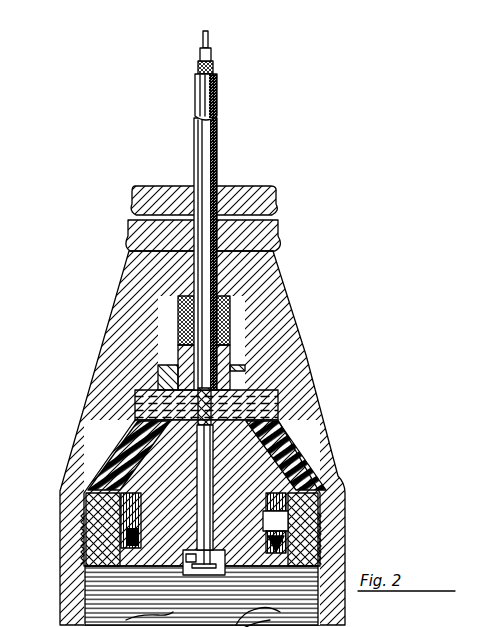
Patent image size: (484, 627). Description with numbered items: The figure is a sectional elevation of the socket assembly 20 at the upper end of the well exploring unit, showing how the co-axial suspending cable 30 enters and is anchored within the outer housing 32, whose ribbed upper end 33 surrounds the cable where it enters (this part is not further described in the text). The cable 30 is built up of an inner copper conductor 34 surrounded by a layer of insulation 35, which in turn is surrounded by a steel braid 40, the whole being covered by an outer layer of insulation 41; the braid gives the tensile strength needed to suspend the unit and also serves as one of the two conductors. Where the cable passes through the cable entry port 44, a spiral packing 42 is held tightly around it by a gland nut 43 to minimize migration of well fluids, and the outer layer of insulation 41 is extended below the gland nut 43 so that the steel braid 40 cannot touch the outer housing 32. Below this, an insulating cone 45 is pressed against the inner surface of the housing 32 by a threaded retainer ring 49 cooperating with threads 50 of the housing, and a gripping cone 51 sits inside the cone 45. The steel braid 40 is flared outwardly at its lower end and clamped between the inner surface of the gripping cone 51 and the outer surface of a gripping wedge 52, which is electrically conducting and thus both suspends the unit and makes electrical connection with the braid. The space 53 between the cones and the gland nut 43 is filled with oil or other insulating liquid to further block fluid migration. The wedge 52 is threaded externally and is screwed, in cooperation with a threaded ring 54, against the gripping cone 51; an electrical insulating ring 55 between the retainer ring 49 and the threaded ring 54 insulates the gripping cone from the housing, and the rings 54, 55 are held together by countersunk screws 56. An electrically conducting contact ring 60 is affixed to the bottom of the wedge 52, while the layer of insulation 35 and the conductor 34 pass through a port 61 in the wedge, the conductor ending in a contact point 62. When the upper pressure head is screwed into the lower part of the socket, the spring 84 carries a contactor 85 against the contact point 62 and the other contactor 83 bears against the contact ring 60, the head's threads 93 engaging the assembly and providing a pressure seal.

The socket assembly 20 is at (92, 300).
The cable 30 is at (207, 85).
The outer housing 32 is at (282, 312).
The ribbed cap 33 is at (268, 219).
The inner copper conductor 34 is at (201, 30).
The layer of insulation 35 is at (192, 47).
The steel braid 40 is at (205, 60).
The outer layer of insulation 41 is at (190, 85).
The spiral packing 42 is at (218, 312).
The gland nut 43 is at (170, 348).
The cable entry port 44 is at (208, 178).
The insulating cone 45 is at (108, 447).
The threaded retainer ring 49 is at (78, 537).
The threads 50 is at (80, 596).
The gripping cone 51 is at (153, 457).
The gripping wedge 52 is at (275, 523).
The space 53 is at (243, 381).
The threaded ring 54 is at (277, 586).
The electrical insulating ring 55 is at (201, 595).
The countersunk screws 56 is at (300, 546).
The contact ring 60 is at (172, 570).
The port 61 is at (182, 518).
The contact point 62 is at (214, 560).
The contactor 83 is at (152, 606).
The spring 84 is at (251, 623).
The contactor 85 is at (240, 600).
The threads 93 is at (120, 612).